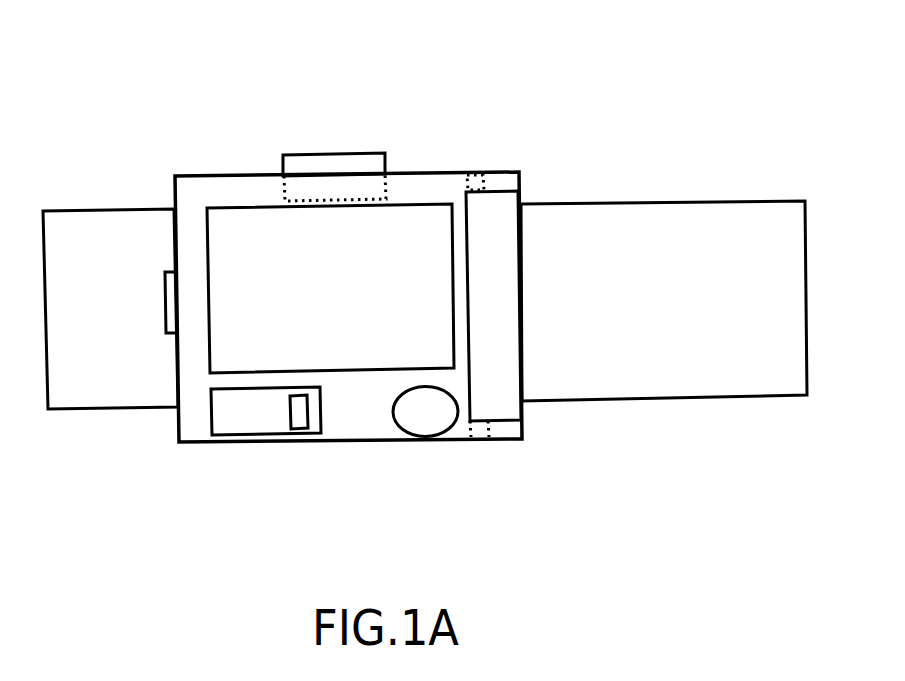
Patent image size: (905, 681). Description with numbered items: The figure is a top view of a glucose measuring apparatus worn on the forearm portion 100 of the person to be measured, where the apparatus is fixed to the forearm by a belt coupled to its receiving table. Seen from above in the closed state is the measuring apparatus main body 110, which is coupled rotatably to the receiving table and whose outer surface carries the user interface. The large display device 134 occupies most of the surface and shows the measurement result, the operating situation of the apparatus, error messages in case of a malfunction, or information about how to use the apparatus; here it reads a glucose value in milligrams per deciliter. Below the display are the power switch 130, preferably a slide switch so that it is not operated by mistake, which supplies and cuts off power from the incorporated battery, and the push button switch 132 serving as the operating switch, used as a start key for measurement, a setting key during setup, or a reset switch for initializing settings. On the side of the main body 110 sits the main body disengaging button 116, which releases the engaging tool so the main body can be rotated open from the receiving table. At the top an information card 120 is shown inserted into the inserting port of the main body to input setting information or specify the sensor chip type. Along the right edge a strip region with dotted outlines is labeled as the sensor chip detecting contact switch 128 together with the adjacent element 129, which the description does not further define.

The forearm portion 100 is at (75, 388).
The measuring apparatus main body 110 is at (362, 430).
The main body disengaging button 116 is at (167, 282).
The information card 120 is at (335, 167).
The sensor chip detecting contact switch 128 is at (500, 407).
The dotted connector region 129 is at (477, 437).
The power switch 130 is at (257, 432).
The push button switch 132 is at (427, 430).
The display device 134 is at (420, 228).